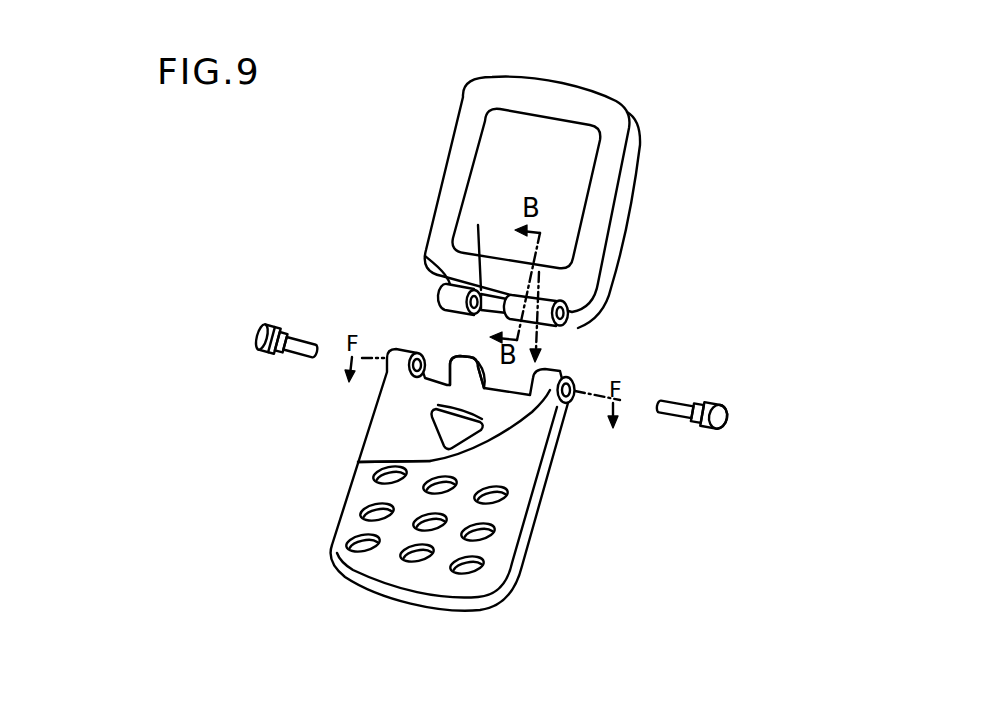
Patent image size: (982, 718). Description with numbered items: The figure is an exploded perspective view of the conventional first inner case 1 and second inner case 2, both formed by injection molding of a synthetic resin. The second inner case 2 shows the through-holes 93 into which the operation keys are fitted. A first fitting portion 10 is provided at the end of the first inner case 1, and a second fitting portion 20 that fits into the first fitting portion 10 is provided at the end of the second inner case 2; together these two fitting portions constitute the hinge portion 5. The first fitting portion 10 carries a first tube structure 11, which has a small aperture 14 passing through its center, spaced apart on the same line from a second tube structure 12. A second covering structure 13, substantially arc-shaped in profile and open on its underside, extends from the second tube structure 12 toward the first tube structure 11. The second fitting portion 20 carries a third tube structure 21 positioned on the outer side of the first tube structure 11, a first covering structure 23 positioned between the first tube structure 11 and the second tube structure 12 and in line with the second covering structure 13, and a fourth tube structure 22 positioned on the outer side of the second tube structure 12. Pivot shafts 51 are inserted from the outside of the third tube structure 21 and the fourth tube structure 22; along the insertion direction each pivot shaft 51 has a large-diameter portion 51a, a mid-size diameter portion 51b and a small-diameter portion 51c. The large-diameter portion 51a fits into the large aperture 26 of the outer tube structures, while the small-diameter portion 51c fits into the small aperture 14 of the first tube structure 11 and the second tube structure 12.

The first inner case 1 is at (612, 214).
The second inner case 2 is at (540, 490).
The hinge portion 5 is at (676, 365).
The first fitting portion 10 is at (387, 238).
The first tube structure 11 is at (425, 256).
The second tube structure 12 is at (495, 316).
The second covering structure 13 is at (536, 294).
The small aperture 14 is at (478, 225).
The second fitting portion 20 is at (353, 418).
The third tube structure 21 is at (393, 366).
The fourth tube structure 22 is at (352, 468).
The first covering structure 23 is at (447, 389).
The large aperture 26 is at (575, 383).
The pivot shaft 51 is at (446, 374).
The large-diameter portion 51a is at (634, 492).
The mid-size diameter portion 51b is at (697, 420).
The small-diameter portion 51c is at (676, 413).
The through-holes 93 is at (473, 565).